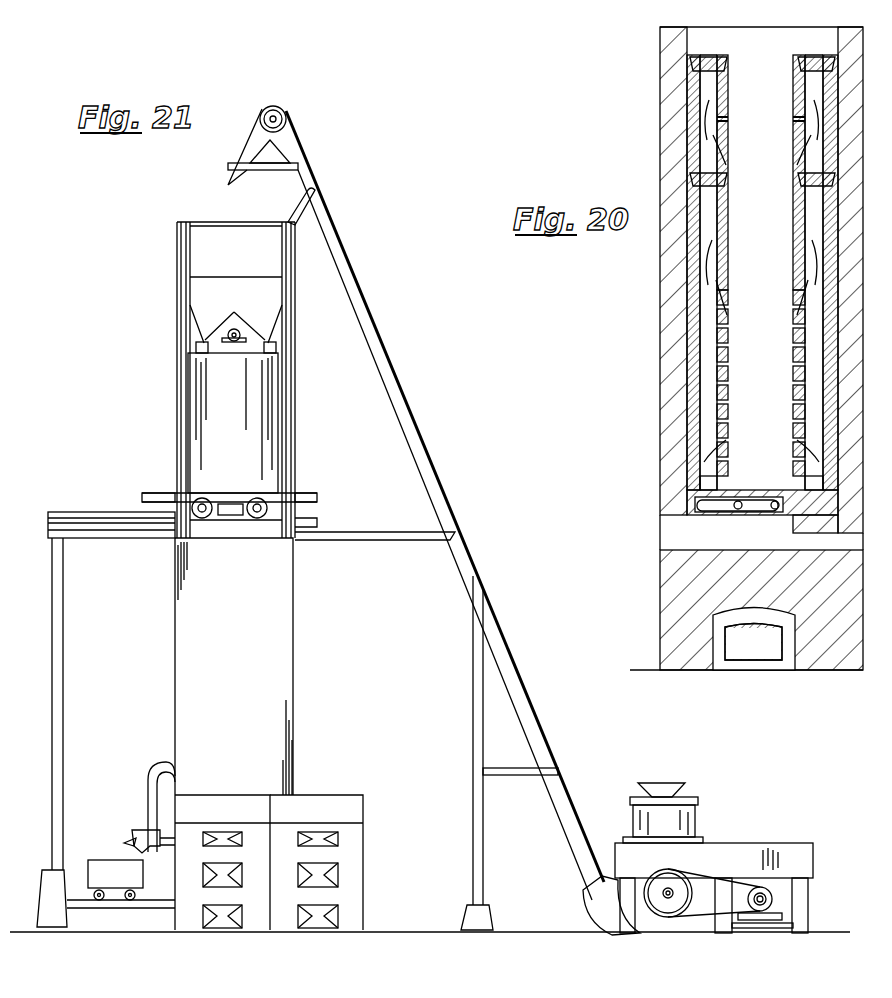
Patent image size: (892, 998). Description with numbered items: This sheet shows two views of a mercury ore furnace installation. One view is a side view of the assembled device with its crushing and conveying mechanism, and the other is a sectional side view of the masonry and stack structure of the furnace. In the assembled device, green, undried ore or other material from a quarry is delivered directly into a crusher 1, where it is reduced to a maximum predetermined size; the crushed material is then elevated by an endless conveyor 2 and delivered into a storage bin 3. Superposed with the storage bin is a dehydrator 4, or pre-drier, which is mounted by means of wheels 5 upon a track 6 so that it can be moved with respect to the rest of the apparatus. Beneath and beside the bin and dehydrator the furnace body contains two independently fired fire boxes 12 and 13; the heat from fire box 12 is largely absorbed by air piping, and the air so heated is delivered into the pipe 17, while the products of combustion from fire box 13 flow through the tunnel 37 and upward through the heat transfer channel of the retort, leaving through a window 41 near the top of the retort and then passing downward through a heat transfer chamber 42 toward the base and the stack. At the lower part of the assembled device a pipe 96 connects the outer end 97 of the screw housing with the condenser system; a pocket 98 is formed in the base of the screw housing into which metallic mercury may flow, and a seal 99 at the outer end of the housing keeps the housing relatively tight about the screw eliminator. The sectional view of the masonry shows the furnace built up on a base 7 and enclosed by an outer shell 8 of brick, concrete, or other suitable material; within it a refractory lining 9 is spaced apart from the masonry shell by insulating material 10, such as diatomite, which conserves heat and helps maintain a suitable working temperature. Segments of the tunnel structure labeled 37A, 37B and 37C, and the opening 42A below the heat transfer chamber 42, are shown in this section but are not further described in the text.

In FIG. 21, the crusher 1 is at (655, 833).
In FIG. 21, the endless conveyor 2 is at (330, 250).
In FIG. 21, the storage bin 3 is at (227, 238).
In FIG. 21, the dehydrator 4 is at (252, 385).
In FIG. 21, the wheels 5 is at (268, 500).
In FIG. 21, the track 6 is at (312, 523).
In FIG. 20, the base 7 is at (665, 583).
In FIG. 21, the outer shell 8 is at (280, 597).
In FIG. 20, the outer shell 8 is at (668, 66).
In FIG. 20, the refractory lining 9 is at (697, 105).
In FIG. 20, the insulating material 10 is at (690, 158).
In FIG. 21, the fire box 12 is at (285, 832).
In FIG. 21, the fire box 13 is at (185, 840).
In FIG. 20, the pipe 17 is at (715, 515).
In FIG. 20, the tunnel 37 is at (697, 487).
In FIG. 20, the ring segment 37A is at (810, 240).
In FIG. 20, the ring segment 37B is at (705, 255).
In FIG. 20, the ring segments 37C is at (787, 402).
In FIG. 20, the window 41 is at (797, 127).
In FIG. 20, the heat transfer chamber 42 is at (712, 82).
In FIG. 20, the outlet opening 42A is at (747, 648).
In FIG. 21, the pipe 96 is at (150, 803).
In FIG. 21, the outer end of screw housing 97 is at (163, 835).
In FIG. 21, the pocket 98 is at (143, 851).
In FIG. 21, the seal 99 is at (126, 843).